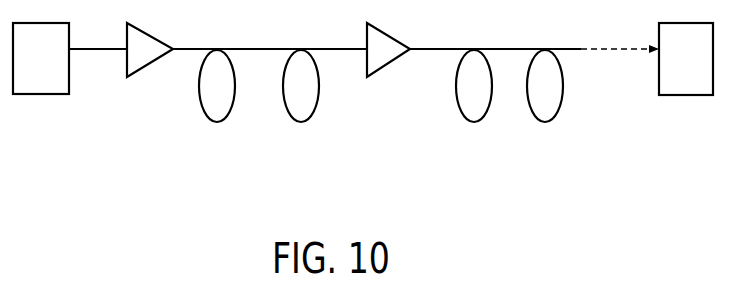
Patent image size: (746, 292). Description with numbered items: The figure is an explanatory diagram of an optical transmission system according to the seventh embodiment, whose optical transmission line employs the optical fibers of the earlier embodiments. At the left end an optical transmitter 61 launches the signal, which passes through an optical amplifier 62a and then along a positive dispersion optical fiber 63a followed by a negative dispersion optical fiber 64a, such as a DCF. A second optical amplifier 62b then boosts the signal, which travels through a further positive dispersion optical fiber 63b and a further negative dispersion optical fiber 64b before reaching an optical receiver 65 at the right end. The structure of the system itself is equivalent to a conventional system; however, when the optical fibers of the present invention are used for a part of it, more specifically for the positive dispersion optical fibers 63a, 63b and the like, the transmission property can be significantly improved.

The optical transmitter 61 is at (39, 94).
The optical amplifier 62a is at (145, 68).
The optical amplifier 62b is at (385, 68).
The positive dispersion optical fiber 63a is at (215, 122).
The positive dispersion optical fiber 63b is at (472, 122).
The negative dispersion optical fiber 64a is at (300, 122).
The negative dispersion optical fiber 64b is at (544, 122).
The optical receiver 65 is at (686, 95).